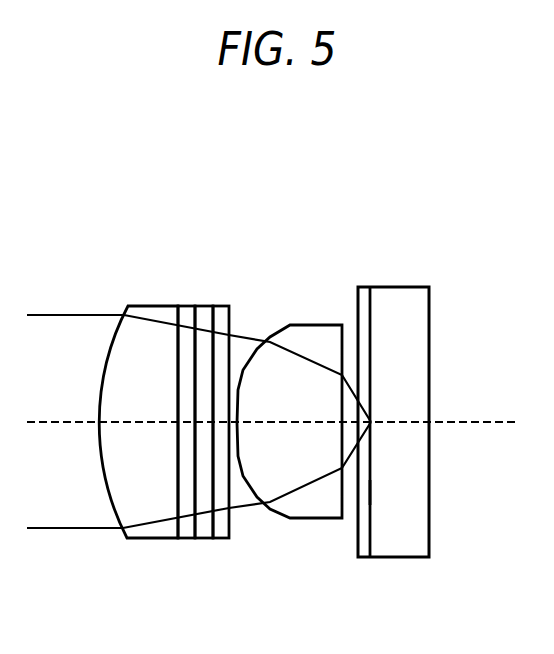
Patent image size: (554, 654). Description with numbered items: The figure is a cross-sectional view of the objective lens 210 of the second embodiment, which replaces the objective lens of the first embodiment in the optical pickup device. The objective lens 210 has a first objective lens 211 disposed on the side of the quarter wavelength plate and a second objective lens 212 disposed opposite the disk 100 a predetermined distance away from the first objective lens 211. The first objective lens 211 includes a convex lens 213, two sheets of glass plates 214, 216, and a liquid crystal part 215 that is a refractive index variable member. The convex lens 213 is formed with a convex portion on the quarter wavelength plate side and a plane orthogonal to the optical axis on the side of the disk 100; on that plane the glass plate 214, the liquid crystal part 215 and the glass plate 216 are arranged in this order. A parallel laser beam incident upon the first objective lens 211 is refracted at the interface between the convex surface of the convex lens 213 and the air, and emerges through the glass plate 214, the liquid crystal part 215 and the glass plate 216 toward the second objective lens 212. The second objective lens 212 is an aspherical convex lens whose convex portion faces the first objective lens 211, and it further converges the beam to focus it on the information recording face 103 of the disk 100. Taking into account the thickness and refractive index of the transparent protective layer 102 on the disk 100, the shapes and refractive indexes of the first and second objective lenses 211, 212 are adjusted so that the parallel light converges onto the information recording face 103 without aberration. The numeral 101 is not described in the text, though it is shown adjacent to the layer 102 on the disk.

The disk 100 is at (432, 246).
The semiconductor substrate 101 is at (405, 352).
The transparent protective layer 102 is at (363, 535).
The information recording face 103 is at (366, 483).
The objective lens 210 is at (167, 214).
The first objective lens 211 is at (114, 553).
The second objective lens 212 is at (303, 507).
The convex lens 213 is at (150, 532).
The glass plate 214 is at (186, 305).
The liquid crystal part 215 is at (207, 305).
The glass plate 216 is at (218, 305).